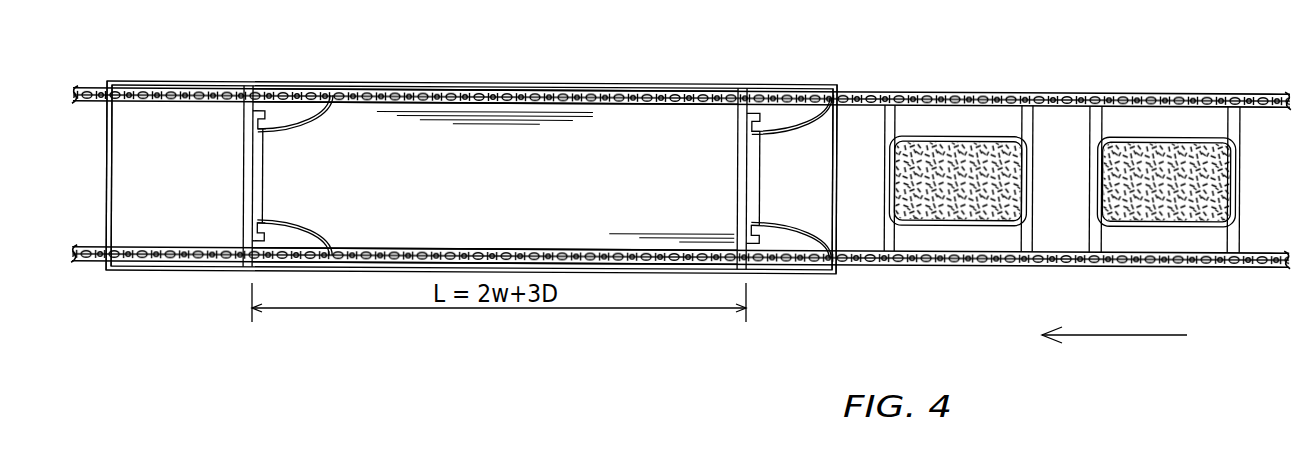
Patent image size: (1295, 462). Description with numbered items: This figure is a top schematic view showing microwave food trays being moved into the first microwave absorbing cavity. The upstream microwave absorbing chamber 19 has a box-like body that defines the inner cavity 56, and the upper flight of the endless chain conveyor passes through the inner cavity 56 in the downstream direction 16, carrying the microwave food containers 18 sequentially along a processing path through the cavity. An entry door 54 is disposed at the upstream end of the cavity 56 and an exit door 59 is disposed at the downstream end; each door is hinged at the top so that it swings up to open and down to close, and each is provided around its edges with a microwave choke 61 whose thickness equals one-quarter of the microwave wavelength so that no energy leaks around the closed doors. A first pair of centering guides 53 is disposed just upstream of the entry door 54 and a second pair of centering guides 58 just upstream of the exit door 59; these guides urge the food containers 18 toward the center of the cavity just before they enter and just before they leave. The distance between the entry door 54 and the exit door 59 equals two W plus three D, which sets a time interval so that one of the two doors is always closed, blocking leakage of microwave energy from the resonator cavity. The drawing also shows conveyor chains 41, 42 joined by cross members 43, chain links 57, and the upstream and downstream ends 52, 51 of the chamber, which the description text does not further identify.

The downstream direction 16 is at (1113, 336).
The microwave food containers 18 is at (958, 226).
The upstream microwave absorbing chamber 19 is at (611, 76).
The upper conveyor chain 41 is at (950, 90).
The lower conveyor chain 42 is at (1062, 262).
The cross members 43 is at (1037, 125).
The downstream end wall 51 is at (846, 274).
The upstream end wall 52 is at (92, 185).
The first pair of centering guides 53 is at (783, 120).
The entry door 54 is at (732, 178).
The inner cavity 56 is at (486, 185).
The chain links 57 is at (362, 88).
The second pair of centering guides 58 is at (295, 125).
The exit door 59 is at (240, 175).
The microwave choke 61 is at (258, 88).